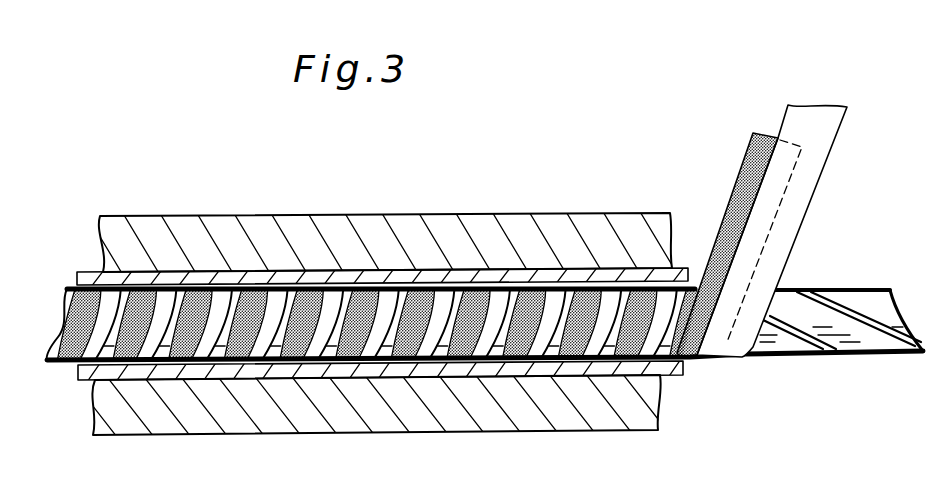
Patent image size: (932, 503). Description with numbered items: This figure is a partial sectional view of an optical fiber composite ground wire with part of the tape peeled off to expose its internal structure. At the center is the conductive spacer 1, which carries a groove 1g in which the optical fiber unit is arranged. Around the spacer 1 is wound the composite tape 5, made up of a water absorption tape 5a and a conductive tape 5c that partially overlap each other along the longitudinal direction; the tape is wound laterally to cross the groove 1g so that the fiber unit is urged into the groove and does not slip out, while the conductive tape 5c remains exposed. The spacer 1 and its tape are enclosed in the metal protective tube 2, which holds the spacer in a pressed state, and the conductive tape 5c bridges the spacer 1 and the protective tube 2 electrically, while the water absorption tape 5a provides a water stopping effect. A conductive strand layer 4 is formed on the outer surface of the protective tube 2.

The spacer 1 is at (485, 325).
The groove 1g is at (857, 318).
The protective tube 2 is at (678, 273).
The conductive strand layer 4 is at (587, 213).
The composite tape 5 is at (762, 187).
The water absorption tape 5a is at (727, 207).
The conductive tape 5c is at (818, 115).